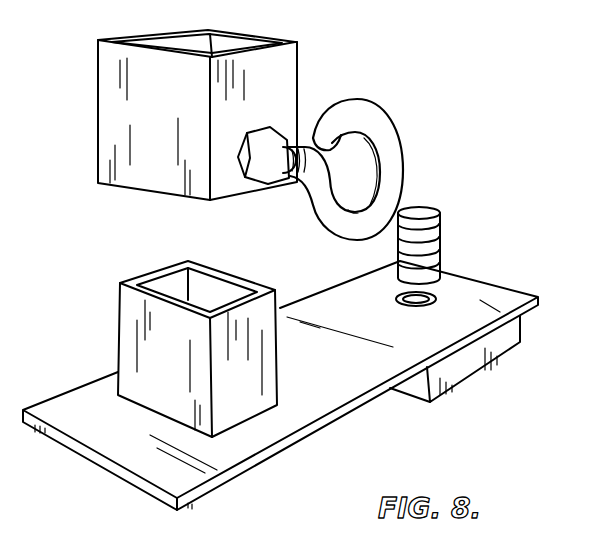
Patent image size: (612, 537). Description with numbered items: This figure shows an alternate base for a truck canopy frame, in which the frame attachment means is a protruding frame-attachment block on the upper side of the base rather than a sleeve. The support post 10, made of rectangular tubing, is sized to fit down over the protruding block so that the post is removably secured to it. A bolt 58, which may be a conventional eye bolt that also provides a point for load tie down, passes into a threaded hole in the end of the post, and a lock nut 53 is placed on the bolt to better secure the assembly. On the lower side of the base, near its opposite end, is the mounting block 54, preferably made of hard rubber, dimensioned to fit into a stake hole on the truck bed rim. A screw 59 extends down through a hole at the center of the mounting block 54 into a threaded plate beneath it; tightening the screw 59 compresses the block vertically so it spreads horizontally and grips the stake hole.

The hollow post 10 is at (102, 71).
The lock nut 53 is at (282, 130).
The bolt 58 is at (390, 128).
The screw 59 is at (441, 222).
The mounting block 54 is at (513, 339).